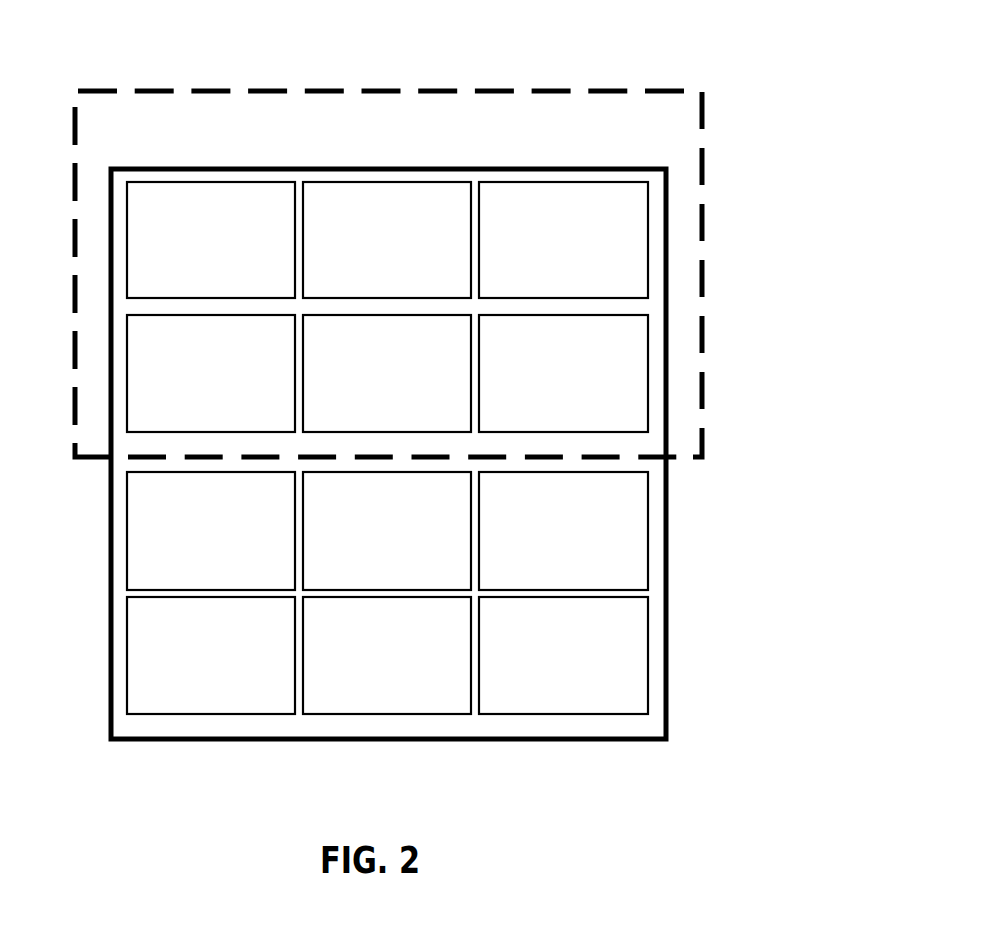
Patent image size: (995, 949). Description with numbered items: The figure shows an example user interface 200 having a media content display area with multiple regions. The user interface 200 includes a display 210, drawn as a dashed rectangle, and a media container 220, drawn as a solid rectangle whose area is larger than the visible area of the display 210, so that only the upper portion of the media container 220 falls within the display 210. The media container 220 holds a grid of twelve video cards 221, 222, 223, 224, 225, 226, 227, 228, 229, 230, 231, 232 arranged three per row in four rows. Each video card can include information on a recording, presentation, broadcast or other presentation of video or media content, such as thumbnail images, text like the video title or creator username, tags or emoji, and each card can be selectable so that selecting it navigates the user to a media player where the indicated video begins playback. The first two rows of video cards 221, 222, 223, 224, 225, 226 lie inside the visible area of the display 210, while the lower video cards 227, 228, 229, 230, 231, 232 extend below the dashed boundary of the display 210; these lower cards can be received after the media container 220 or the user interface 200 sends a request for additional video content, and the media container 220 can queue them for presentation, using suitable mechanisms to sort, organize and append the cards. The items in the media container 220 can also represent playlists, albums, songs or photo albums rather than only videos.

The user interface 200 is at (80, 40).
The display 210 is at (711, 93).
The media container 220 is at (493, 156).
The video card 221 is at (211, 240).
The video card 222 is at (387, 240).
The video card 223 is at (563, 240).
The video card 224 is at (211, 373).
The video card 225 is at (387, 373).
The video card 226 is at (563, 373).
The video card 227 is at (211, 531).
The video card 228 is at (387, 531).
The video card 229 is at (563, 531).
The video card 230 is at (211, 655).
The video card 231 is at (387, 655).
The video card 232 is at (563, 655).